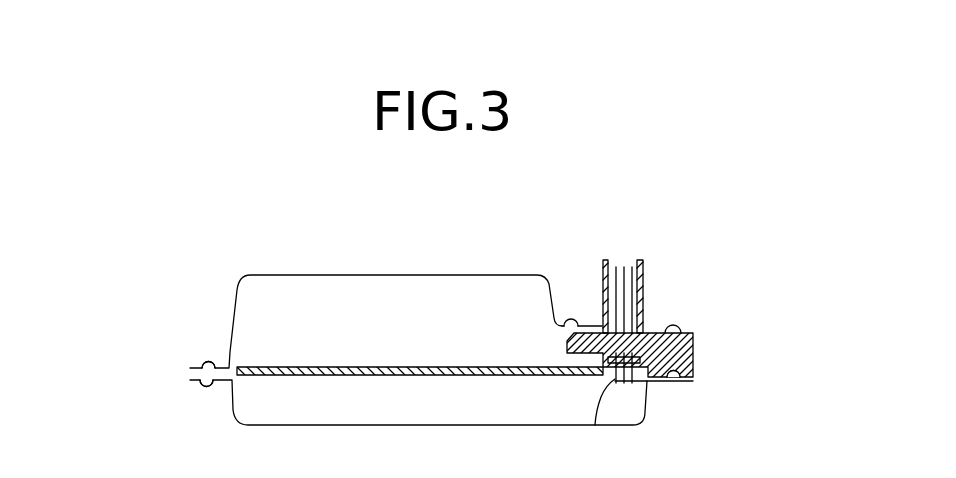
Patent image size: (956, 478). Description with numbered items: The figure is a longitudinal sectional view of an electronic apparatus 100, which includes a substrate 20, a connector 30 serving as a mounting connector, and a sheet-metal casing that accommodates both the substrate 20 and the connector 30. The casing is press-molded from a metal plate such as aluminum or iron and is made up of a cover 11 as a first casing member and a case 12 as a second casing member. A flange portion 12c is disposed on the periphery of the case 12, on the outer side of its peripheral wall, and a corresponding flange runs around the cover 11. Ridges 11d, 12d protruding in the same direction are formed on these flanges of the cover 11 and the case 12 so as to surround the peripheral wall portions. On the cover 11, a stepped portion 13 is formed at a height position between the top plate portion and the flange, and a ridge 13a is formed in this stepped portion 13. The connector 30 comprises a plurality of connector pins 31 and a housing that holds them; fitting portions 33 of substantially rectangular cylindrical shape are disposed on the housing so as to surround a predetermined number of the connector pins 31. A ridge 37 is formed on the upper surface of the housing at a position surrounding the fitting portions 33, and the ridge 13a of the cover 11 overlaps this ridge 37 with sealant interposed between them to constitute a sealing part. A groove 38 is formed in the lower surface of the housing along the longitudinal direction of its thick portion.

The electronic apparatus 100 is at (255, 243).
The cover 11 is at (450, 275).
The ridge 11d is at (203, 361).
The case 12 is at (453, 426).
The flange portion 12c is at (685, 383).
The ridge 12d is at (207, 388).
The stepped portion 13 is at (684, 327).
The ridge 13a is at (562, 320).
The substrate 20 is at (302, 377).
The connector 30 is at (697, 340).
The connector pins 31 is at (595, 425).
The fitting portions 33 is at (645, 278).
The ridge 37 is at (578, 324).
The groove 38 is at (680, 345).